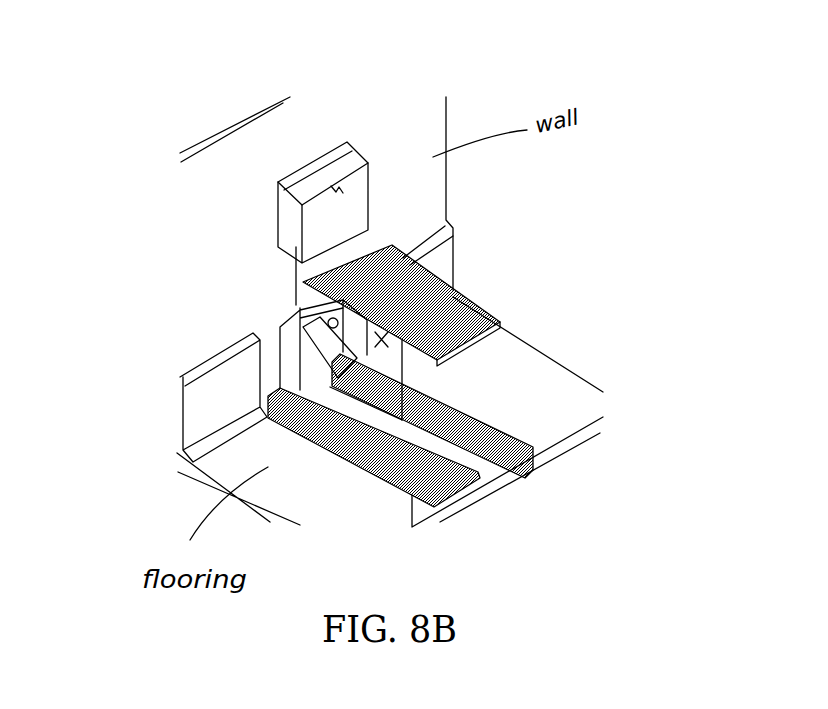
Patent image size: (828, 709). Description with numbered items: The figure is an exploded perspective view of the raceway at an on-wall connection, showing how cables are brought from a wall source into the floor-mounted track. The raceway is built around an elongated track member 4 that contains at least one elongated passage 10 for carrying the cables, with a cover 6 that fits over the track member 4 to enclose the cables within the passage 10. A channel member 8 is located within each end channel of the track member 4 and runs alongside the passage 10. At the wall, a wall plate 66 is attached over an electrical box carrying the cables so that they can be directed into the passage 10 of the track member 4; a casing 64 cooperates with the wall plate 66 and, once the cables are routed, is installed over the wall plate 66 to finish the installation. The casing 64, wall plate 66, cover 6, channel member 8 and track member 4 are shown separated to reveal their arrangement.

The track member 4 is at (503, 445).
The cover 6 is at (450, 292).
The channel member 8 is at (408, 487).
The passage 10 is at (502, 427).
The casing 64 is at (352, 162).
The wall plate 66 is at (302, 306).